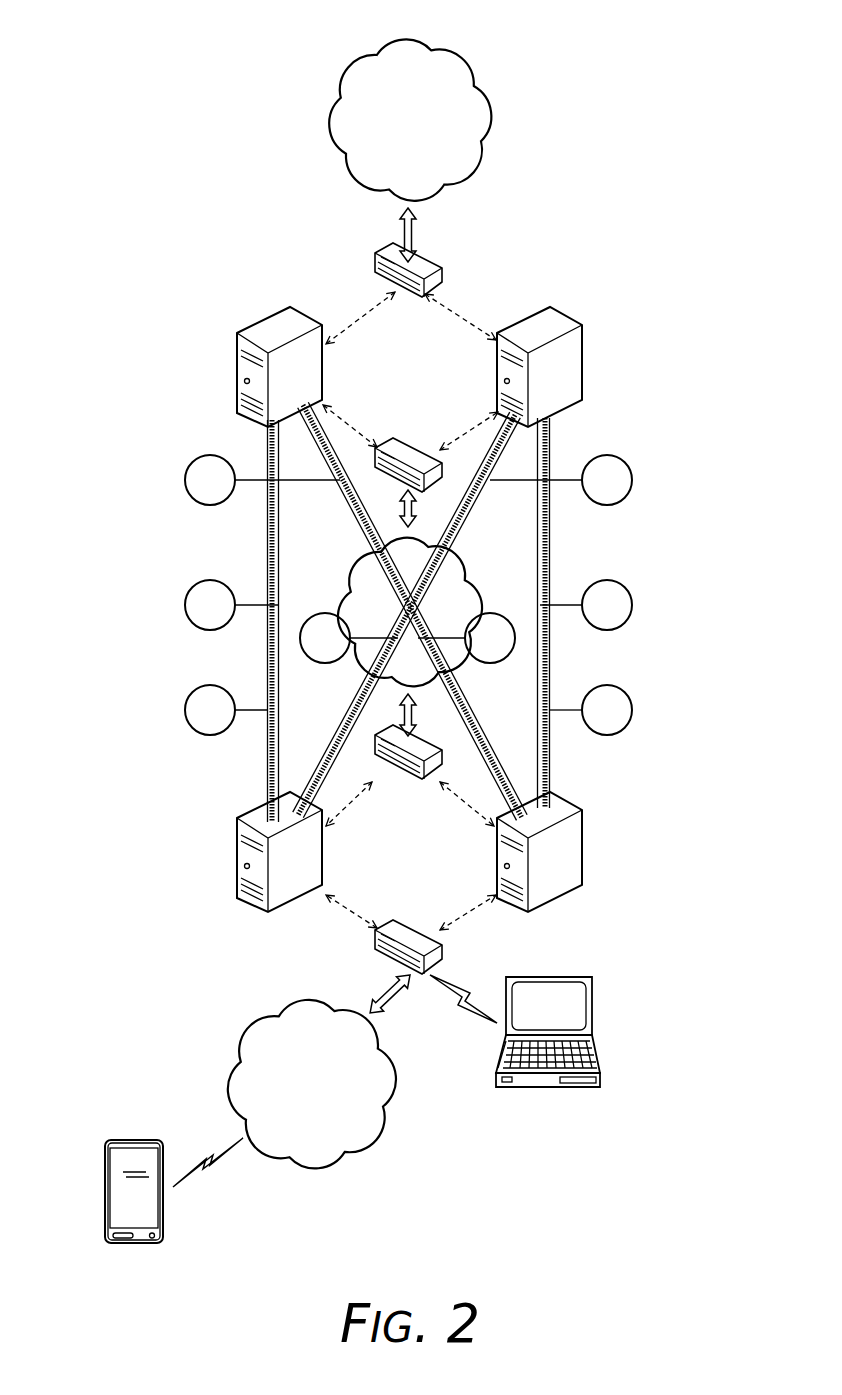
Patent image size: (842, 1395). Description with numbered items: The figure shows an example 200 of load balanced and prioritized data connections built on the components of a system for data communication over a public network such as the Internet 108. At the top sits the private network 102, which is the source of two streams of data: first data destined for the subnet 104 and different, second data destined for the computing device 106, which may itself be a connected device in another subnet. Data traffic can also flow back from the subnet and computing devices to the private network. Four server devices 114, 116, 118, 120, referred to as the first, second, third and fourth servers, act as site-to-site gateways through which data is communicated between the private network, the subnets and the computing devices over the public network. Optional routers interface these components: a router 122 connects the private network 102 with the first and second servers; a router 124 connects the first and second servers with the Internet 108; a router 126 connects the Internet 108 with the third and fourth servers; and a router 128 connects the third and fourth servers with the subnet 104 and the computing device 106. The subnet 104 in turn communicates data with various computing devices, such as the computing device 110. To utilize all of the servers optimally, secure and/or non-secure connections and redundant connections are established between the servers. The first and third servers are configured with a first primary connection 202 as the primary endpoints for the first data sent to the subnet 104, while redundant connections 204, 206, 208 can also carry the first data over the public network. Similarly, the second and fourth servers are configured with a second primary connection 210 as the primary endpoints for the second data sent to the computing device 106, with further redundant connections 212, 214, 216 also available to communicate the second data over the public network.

The example of load balanced and prioritized data connections 200 is at (700, 76).
The private network 102 is at (375, 108).
The subnet 104 is at (276, 1079).
The computing device 106 is at (530, 1124).
The Internet 108 is at (520, 552).
The computing device 110 is at (115, 1280).
The server device 114 is at (549, 295).
The server device 116 is at (289, 295).
The server device 118 is at (549, 948).
The server device 120 is at (289, 948).
The router 122 is at (471, 244).
The router 124 is at (451, 428).
The router 126 is at (444, 816).
The router 128 is at (451, 916).
The first primary connection (SC1) 202 is at (589, 661).
The connection (SC2) 204 is at (307, 694).
The connection (SC3) 206 is at (192, 661).
The connection (SC4) 208 is at (472, 694).
The second primary connection (SC5) 210 is at (192, 766).
The connection (SC6) 212 is at (192, 536).
The connection (SC7) 214 is at (589, 766).
The connection (SC8) 216 is at (589, 536).